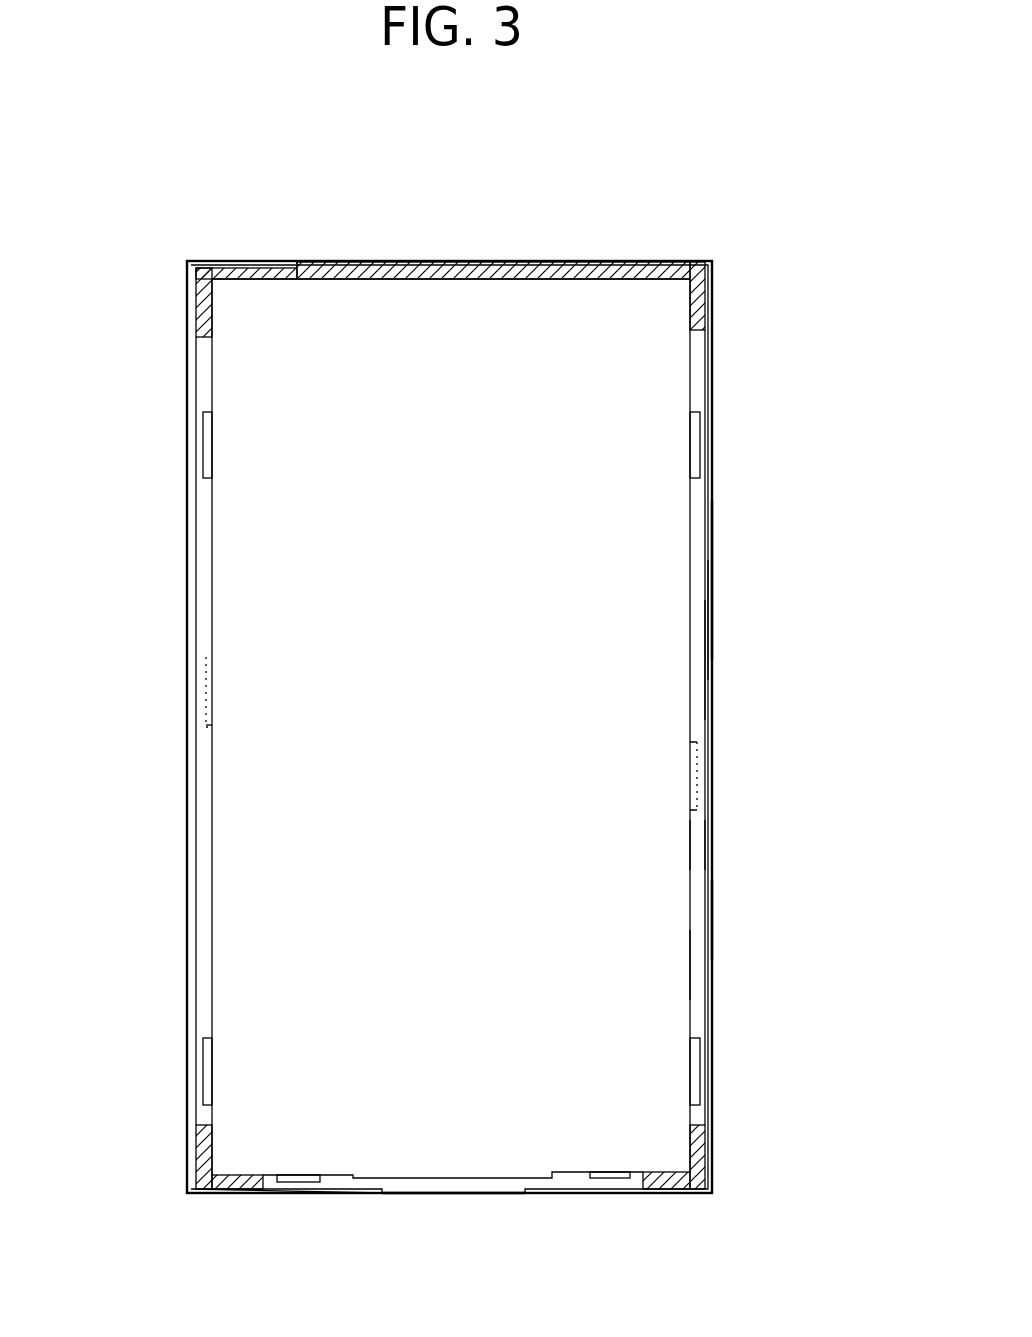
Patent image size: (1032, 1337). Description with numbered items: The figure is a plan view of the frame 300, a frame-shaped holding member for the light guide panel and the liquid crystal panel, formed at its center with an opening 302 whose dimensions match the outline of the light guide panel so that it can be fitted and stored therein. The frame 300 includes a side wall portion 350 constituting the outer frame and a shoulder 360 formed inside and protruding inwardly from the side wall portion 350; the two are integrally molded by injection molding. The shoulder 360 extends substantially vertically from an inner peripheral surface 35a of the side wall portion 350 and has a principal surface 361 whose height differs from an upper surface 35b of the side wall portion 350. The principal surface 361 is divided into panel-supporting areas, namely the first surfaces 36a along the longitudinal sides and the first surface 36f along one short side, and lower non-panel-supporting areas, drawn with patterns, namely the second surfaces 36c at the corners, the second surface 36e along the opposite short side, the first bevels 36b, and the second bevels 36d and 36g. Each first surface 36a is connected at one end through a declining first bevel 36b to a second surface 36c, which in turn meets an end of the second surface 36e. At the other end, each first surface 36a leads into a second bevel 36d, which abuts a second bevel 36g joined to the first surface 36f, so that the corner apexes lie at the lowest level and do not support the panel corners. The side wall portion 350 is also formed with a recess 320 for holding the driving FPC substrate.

The frame 300 is at (812, 151).
The recess 320 is at (313, 262).
The second surface 36e is at (497, 262).
The second surfaces 36c is at (207, 300).
The first bevels 36b is at (205, 337).
The first surfaces 36a is at (205, 628).
The side wall portion 350 is at (722, 582).
The shoulder 360 is at (718, 626).
The principal surface 361 is at (705, 659).
The inner peripheral surface 35a is at (703, 838).
The upper surface 35b is at (711, 918).
The opening 302 is at (690, 968).
The second bevels 36d is at (207, 1148).
The second bevels 36g is at (259, 1186).
The first surface 36f is at (476, 1192).